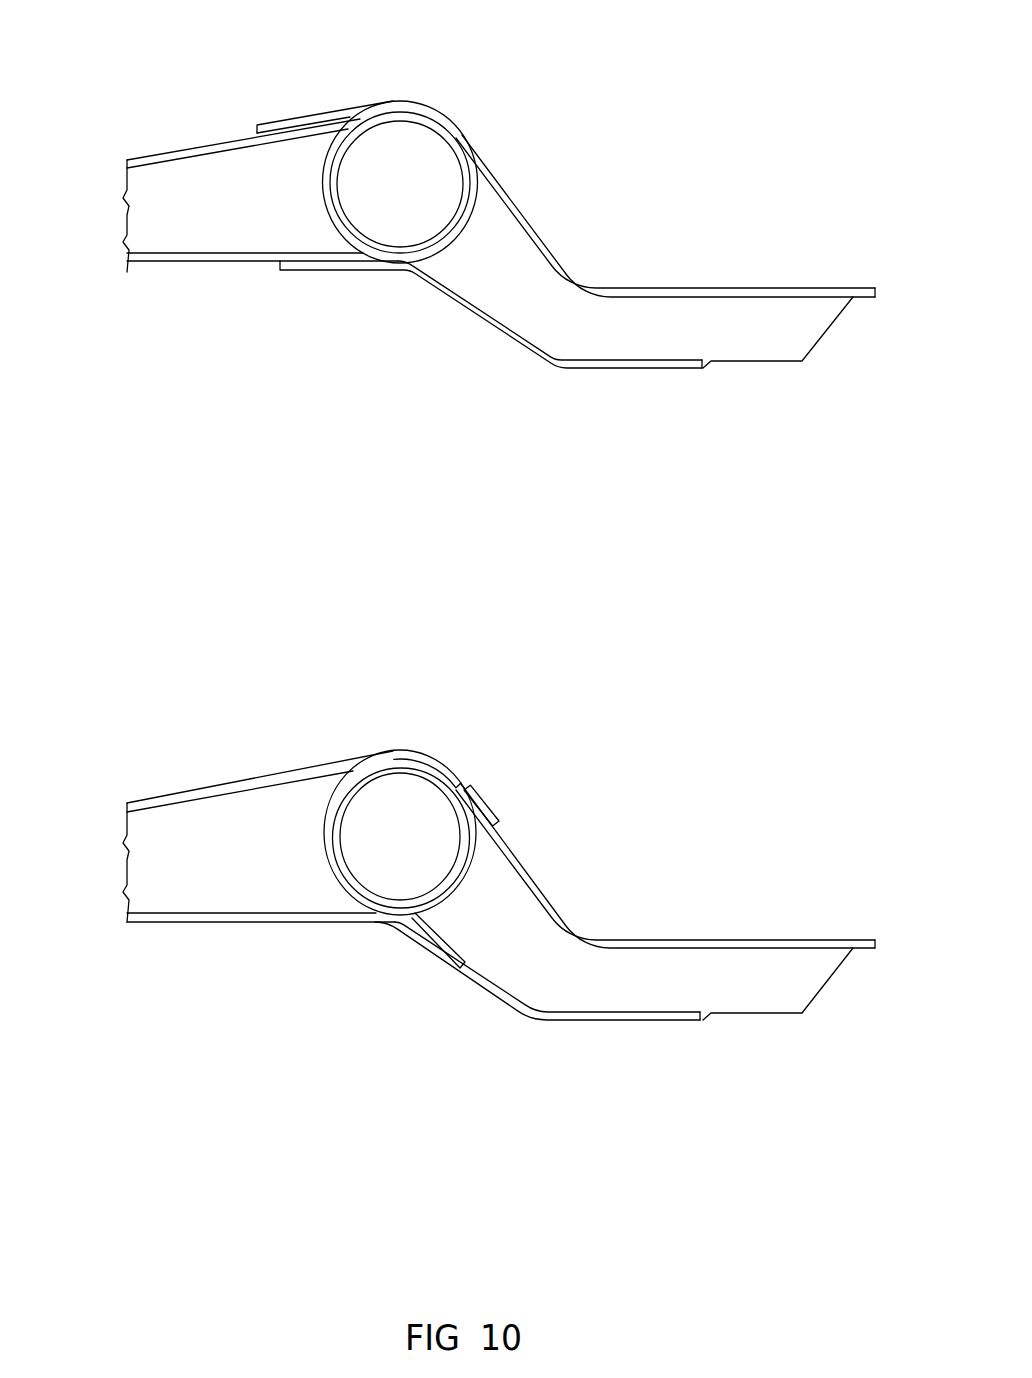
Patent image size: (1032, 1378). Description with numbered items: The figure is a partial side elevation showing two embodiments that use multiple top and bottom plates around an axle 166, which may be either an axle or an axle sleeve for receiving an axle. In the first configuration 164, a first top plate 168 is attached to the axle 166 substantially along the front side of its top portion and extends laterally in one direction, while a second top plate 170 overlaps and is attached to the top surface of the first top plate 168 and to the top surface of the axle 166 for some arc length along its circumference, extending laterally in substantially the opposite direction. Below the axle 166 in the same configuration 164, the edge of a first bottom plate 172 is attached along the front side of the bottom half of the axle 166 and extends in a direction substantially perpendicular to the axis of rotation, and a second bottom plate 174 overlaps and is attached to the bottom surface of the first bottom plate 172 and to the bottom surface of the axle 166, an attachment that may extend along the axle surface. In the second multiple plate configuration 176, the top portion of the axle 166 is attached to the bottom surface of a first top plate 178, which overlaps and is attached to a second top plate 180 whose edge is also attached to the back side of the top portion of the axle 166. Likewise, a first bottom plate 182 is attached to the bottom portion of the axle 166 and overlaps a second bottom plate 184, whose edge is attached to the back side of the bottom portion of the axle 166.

The first configuration 164 is at (416, 260).
The axle 166 is at (463, 229).
The first top plate 168 is at (183, 152).
The second top plate 170 is at (337, 111).
The first bottom plate 172 is at (221, 262).
The second bottom plate 174 is at (481, 318).
The second multiple plate configuration 176 is at (499, 938).
The first top plate 178 is at (262, 777).
The second top plate 180 is at (712, 938).
The first bottom plate 182 is at (256, 924).
The second bottom plate 184 is at (659, 1021).